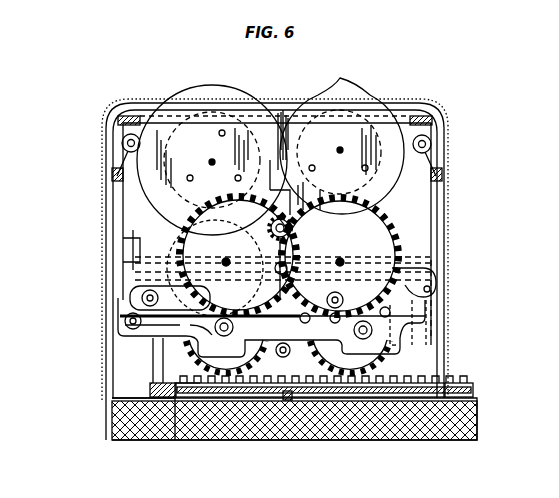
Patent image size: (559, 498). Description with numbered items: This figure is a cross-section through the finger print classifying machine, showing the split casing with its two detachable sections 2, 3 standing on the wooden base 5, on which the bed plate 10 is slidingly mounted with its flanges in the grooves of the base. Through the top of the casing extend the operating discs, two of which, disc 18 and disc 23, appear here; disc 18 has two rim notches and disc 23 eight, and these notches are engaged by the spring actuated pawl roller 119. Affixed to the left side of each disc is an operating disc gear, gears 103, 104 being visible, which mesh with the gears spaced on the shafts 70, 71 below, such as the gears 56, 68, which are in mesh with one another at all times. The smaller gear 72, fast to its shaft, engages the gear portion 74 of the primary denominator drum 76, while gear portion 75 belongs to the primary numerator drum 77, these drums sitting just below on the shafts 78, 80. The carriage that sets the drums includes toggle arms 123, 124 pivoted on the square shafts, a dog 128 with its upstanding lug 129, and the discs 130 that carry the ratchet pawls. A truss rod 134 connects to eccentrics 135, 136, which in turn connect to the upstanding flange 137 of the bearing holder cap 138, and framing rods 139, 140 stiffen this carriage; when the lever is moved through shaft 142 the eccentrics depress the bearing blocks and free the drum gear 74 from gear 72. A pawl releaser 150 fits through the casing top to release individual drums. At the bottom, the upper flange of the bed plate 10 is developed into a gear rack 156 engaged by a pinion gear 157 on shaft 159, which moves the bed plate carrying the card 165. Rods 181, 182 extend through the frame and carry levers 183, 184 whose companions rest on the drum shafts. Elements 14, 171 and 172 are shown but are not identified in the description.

The casing section 2 is at (448, 128).
The casing section 3 is at (430, 268).
The base 5 is at (317, 433).
The bed plate 10 is at (480, 398).
The main gear 14 is at (243, 210).
The operating disc 18 is at (216, 88).
The operating disc 23 is at (377, 82).
The gear 56 is at (178, 214).
The gear 68 is at (366, 205).
The shaft 70 is at (226, 262).
The shaft 71 is at (340, 262).
The gear 72 is at (215, 268).
The gear 74 is at (398, 360).
The gear 75 is at (175, 350).
The primary classification denominator drum 76 is at (395, 370).
The primary classification numerator drum 77 is at (190, 352).
The shaft 78 is at (231, 328).
The shaft 80 is at (374, 330).
The operating disc gear 103 is at (211, 158).
The operating disc gear 104 is at (333, 191).
The spring actuated pawl roller 119 is at (122, 142).
The toggle arm 123 is at (202, 350).
The toggle arm 124 is at (336, 326).
The dog 128 is at (138, 310).
The lug 129 is at (281, 236).
The disc 130 is at (133, 321).
The truss rod 134 is at (436, 278).
The eccentric 135 is at (349, 299).
The eccentric 136 is at (195, 330).
The upstanding flange 137 is at (400, 303).
The bearing holder cap 138 is at (393, 312).
The framing rod 139 is at (415, 296).
The framing rod 140 is at (145, 298).
The shaft 142 is at (268, 222).
The pawl releaser 150 is at (123, 243).
The gear rack 156 is at (470, 390).
The pinion gear 157 is at (287, 400).
The shaft 159 is at (128, 420).
The card 165 is at (452, 387).
The block 171 is at (158, 386).
The slide 172 is at (200, 380).
The rod 181 is at (122, 326).
The rod 182 is at (284, 342).
The lever 183 is at (130, 332).
The lever 184 is at (301, 326).